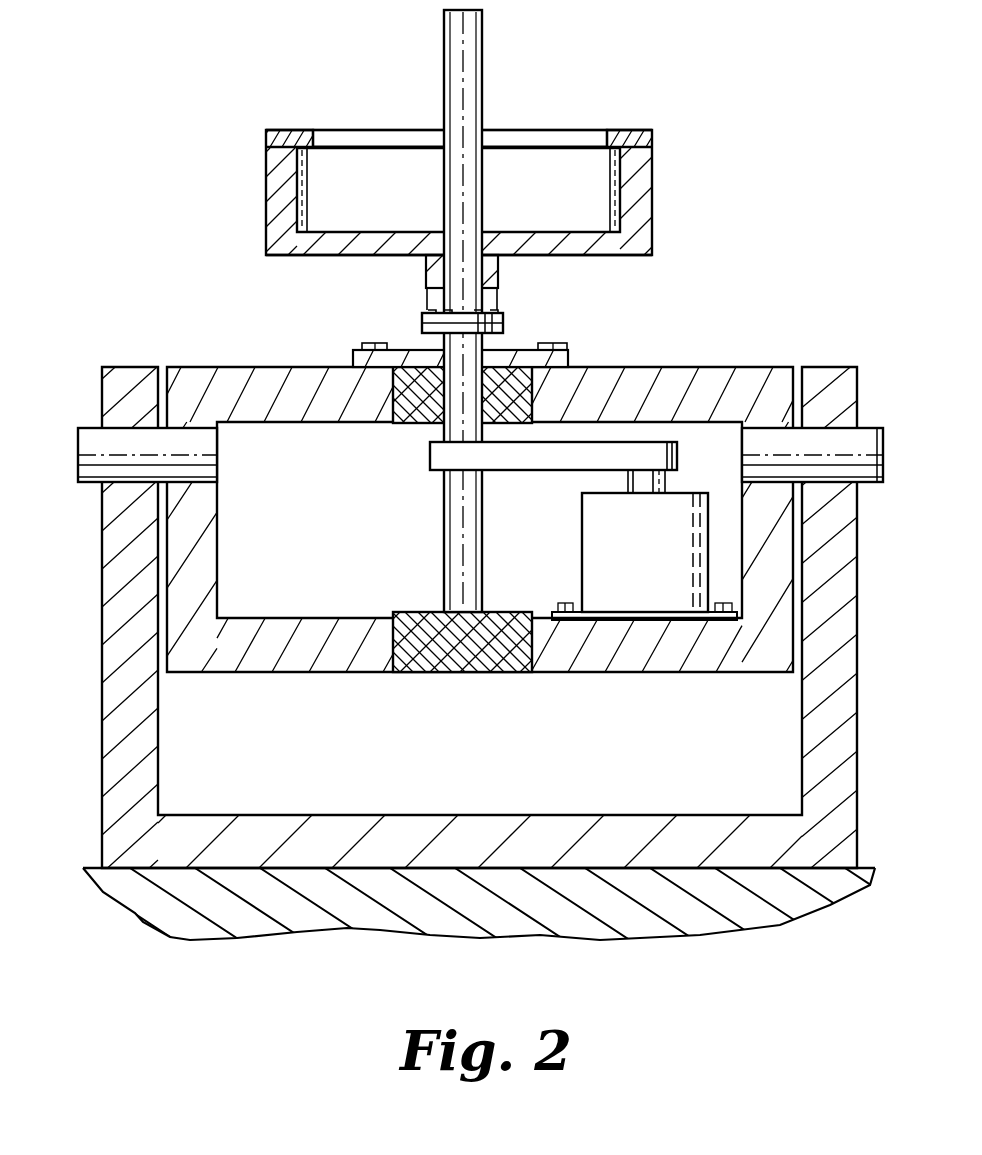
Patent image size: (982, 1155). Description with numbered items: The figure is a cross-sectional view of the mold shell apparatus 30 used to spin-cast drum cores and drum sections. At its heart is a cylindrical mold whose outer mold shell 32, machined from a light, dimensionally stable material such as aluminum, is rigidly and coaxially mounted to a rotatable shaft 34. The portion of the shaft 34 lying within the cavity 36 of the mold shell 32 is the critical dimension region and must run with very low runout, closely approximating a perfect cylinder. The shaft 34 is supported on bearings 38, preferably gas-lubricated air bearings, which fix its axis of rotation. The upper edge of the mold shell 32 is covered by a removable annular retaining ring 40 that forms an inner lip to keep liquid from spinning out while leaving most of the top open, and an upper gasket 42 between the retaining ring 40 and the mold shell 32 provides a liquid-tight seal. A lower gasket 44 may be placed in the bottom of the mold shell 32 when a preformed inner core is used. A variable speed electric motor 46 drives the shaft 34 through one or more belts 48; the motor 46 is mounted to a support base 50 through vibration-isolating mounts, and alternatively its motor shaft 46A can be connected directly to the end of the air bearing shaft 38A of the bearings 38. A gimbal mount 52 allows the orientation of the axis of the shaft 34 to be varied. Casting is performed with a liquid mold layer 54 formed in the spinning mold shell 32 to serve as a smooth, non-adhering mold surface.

The mold shell apparatus 30 is at (198, 228).
The outer mold shell 32 is at (638, 199).
The rotatable shaft 34 is at (469, 62).
The cavity 36 is at (547, 160).
The bearings 38 is at (418, 411).
The air bearing shaft 38A is at (456, 358).
The retaining ring 40 is at (640, 130).
The upper gasket 42 is at (649, 155).
The lower gasket 44 is at (601, 233).
The variable speed electric motor 46 is at (593, 521).
The motor shaft 46A is at (640, 481).
The belts 48 is at (677, 457).
The support base 50 is at (661, 655).
The gimbal mount 52 is at (393, 838).
The liquid mold layer 54 is at (295, 170).